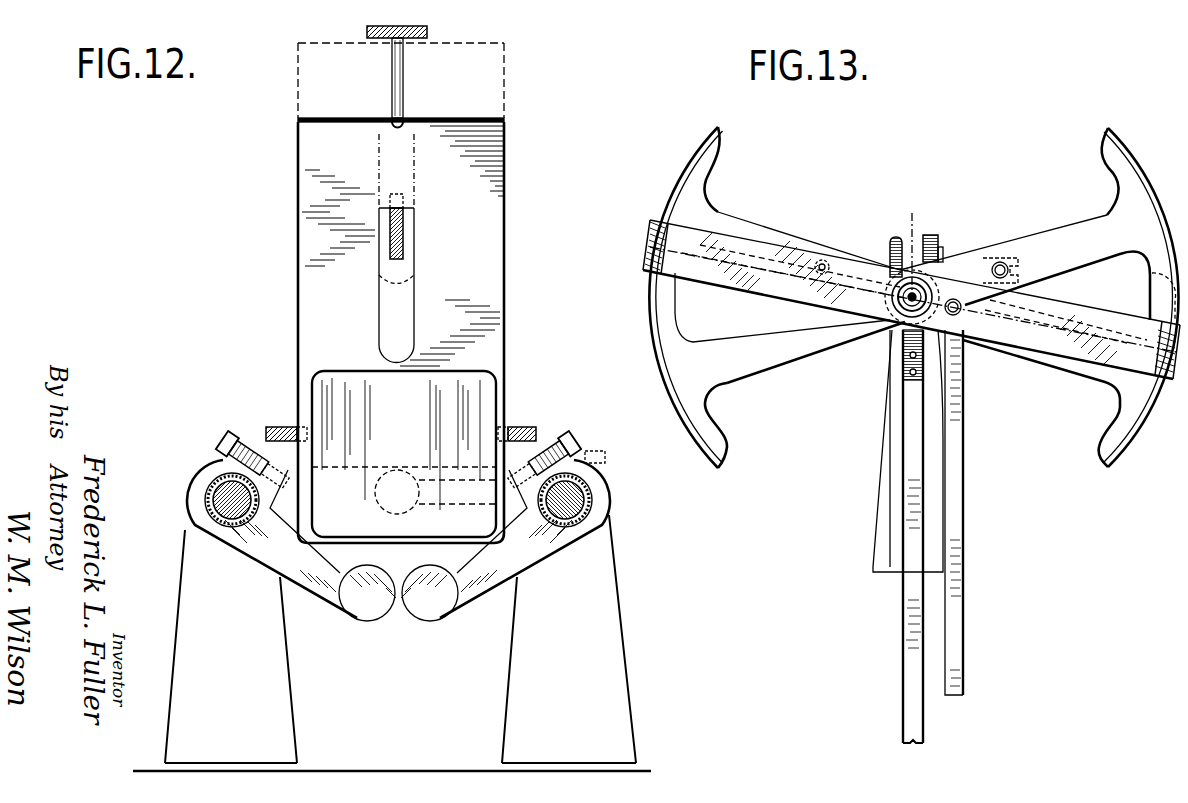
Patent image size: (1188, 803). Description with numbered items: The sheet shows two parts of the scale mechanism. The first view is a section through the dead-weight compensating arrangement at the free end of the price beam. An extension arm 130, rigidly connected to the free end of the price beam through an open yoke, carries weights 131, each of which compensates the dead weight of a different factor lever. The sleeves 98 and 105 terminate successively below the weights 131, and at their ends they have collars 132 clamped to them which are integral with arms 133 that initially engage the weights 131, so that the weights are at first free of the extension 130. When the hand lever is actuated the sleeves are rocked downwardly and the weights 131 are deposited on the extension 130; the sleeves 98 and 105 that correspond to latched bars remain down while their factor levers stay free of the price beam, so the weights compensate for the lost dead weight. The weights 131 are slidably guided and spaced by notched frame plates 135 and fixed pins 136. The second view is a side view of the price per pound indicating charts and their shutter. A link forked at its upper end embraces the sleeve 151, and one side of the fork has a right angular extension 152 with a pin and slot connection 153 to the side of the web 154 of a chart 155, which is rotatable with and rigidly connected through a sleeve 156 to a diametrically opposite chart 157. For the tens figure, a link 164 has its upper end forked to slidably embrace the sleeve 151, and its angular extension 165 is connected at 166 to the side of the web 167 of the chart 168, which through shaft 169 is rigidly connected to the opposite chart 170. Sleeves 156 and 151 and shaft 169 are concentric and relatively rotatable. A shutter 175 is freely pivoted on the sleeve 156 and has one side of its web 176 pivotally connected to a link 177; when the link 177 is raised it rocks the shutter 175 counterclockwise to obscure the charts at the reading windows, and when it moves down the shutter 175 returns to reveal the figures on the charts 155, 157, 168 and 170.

In FIG. 12, the sleeve 98 is at (575, 497).
In FIG. 12, the sleeve 105 is at (217, 480).
In FIG. 12, the arm 130 is at (404, 232).
In FIG. 12, the weights 131 is at (489, 285).
In FIG. 12, the collars 132 is at (201, 492).
In FIG. 12, the arms 133 is at (362, 606).
In FIG. 12, the notched frame plates 135 is at (283, 426).
In FIG. 12, the fixed pins 136 is at (403, 77).
In FIG. 13, the sleeve 151 is at (912, 260).
In FIG. 13, the right angular extension 152 is at (885, 262).
In FIG. 13, the pin and slot connection 153 is at (822, 255).
In FIG. 13, the web 154 is at (730, 223).
In FIG. 13, the chart 155 is at (705, 160).
In FIG. 13, the sleeve 156 is at (883, 333).
In FIG. 13, the chart 157 is at (1120, 453).
In FIG. 13, the link 164 is at (907, 613).
In FIG. 13, the angular extension 165 is at (942, 262).
In FIG. 13, the connection 166 is at (1002, 262).
In FIG. 13, the web 167 is at (1070, 263).
In FIG. 13, the chart 168 is at (1127, 160).
In FIG. 13, the shaft 169 is at (958, 313).
In FIG. 13, the chart 170 is at (690, 433).
In FIG. 13, the shutter 175 is at (645, 247).
In FIG. 13, the web 176 is at (712, 279).
In FIG. 13, the link 177 is at (958, 632).